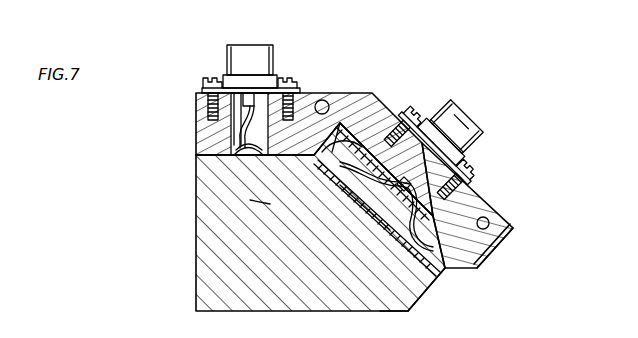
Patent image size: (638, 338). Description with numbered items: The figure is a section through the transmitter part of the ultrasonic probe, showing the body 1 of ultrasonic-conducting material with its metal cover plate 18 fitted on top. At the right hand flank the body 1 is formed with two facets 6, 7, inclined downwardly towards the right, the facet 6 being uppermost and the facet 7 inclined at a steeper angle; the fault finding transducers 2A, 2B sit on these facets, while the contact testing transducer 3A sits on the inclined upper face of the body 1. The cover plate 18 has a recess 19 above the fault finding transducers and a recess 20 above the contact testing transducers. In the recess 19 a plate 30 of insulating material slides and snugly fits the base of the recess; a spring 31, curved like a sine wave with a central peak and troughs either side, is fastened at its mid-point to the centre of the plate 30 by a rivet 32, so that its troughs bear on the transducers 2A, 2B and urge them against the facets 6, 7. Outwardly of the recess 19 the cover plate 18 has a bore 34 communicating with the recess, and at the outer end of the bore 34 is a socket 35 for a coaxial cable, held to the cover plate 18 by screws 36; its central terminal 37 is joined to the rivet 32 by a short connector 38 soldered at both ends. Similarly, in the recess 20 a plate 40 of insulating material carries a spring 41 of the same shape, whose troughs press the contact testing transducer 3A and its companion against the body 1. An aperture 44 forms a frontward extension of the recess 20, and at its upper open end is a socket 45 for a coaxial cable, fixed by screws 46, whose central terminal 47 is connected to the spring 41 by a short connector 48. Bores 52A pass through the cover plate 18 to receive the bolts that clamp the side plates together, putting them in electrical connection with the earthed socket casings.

The body 1 is at (250, 237).
The fault finding transducer 2A is at (338, 184).
The fault finding transducer 2B is at (383, 215).
The contact testing transducer 3A is at (333, 165).
The facet 6 is at (263, 202).
The facet 7 is at (420, 236).
The cover plate 18 is at (475, 186).
The recess 19 is at (453, 242).
The recess 20 is at (245, 100).
The plate of insulating material 30 is at (344, 130).
The spring 31 is at (415, 302).
The rivet 32 is at (415, 123).
The bore 34 is at (463, 152).
The socket 35 is at (450, 130).
The screws 36 is at (398, 112).
The central terminal 37 is at (435, 125).
The connector 38 is at (443, 270).
The plate of insulating material 40 is at (232, 138).
The spring 41 is at (236, 152).
The aperture 44 is at (202, 90).
The socket 45 is at (258, 53).
The screws 46 is at (208, 78).
The central terminal 47 is at (248, 102).
The connector 48 is at (232, 126).
The bore 52A is at (322, 100).